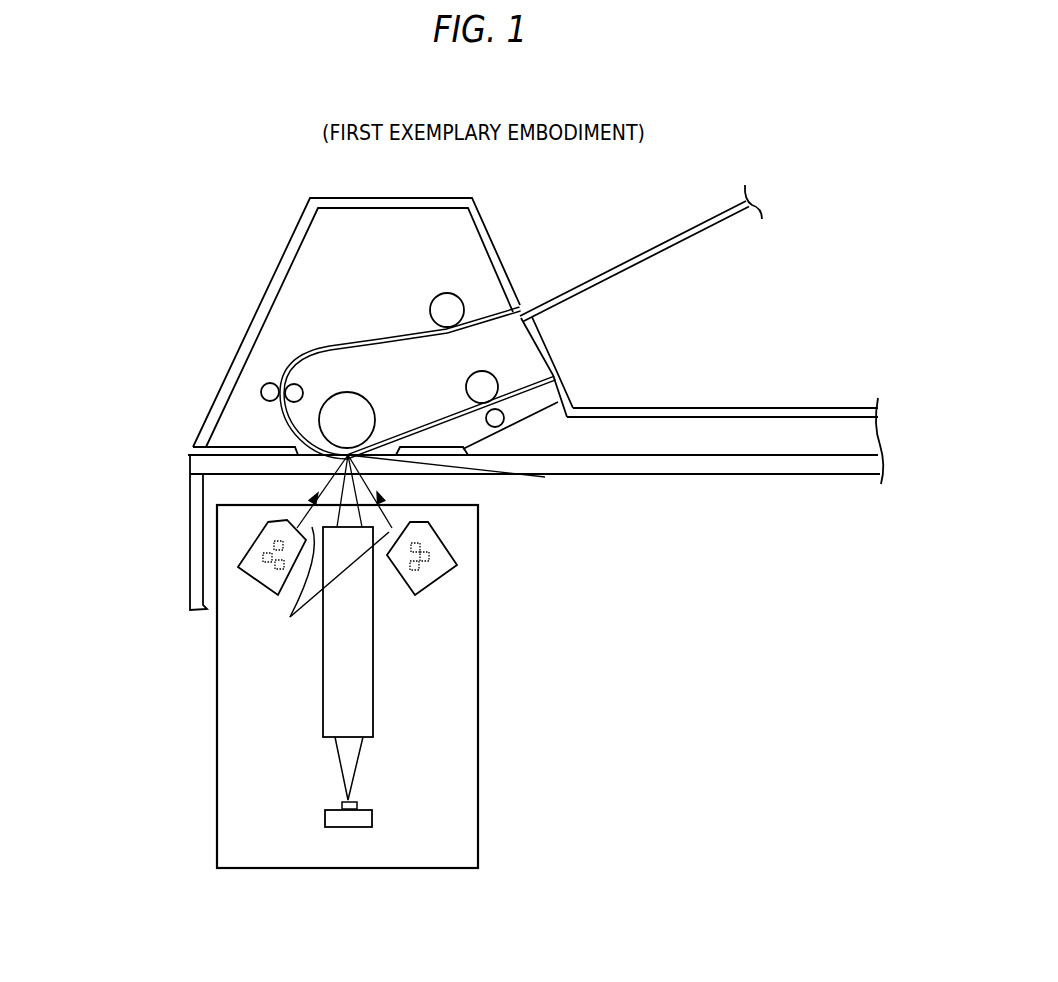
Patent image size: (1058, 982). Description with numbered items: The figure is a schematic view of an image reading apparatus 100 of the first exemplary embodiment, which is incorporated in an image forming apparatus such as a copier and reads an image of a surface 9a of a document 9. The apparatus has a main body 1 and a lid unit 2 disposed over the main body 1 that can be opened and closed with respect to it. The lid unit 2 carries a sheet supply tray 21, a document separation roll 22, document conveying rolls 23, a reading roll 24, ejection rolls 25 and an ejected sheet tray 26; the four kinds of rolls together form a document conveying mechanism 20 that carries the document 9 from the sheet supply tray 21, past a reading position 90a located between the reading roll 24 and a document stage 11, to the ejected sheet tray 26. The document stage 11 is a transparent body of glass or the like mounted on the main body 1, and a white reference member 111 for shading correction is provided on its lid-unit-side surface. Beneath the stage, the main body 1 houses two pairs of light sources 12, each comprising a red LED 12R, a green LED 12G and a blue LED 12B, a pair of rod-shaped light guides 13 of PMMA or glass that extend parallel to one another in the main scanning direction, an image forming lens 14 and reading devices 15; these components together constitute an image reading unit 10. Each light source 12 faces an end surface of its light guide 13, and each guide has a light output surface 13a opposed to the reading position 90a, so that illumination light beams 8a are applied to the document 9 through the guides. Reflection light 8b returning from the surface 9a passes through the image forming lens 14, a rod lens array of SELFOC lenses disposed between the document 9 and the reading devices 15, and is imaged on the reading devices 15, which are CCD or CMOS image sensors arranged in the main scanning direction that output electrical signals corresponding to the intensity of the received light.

The image reading apparatus 100 is at (787, 225).
The main body 1 is at (162, 482).
The lid unit 2 is at (205, 258).
The document 9 is at (487, 313).
The surface of the document 9a is at (281, 412).
The document conveying mechanism 20 is at (473, 258).
The sheet supply tray 21 is at (677, 247).
The document separation roll 22 is at (442, 298).
The document conveying rolls 23 is at (266, 386).
The reading roll 24 is at (362, 410).
The ejection rolls 25 is at (477, 380).
The ejected sheet tray 26 is at (792, 406).
The white reference member 111 is at (558, 400).
The document stage 11 is at (828, 455).
The reading position 90a is at (348, 455).
The illumination light beams 8a is at (379, 493).
The reflection light 8b is at (316, 495).
The light guides 13 is at (253, 543).
The light output surface 13a is at (330, 587).
The light sources 12 is at (100, 533).
The green LED 12G is at (275, 545).
The red LED 12R is at (263, 558).
The blue LED 12B is at (277, 567).
The image forming lens 14 is at (363, 693).
The image reading unit 10 is at (478, 735).
The reading devices 15 is at (370, 818).